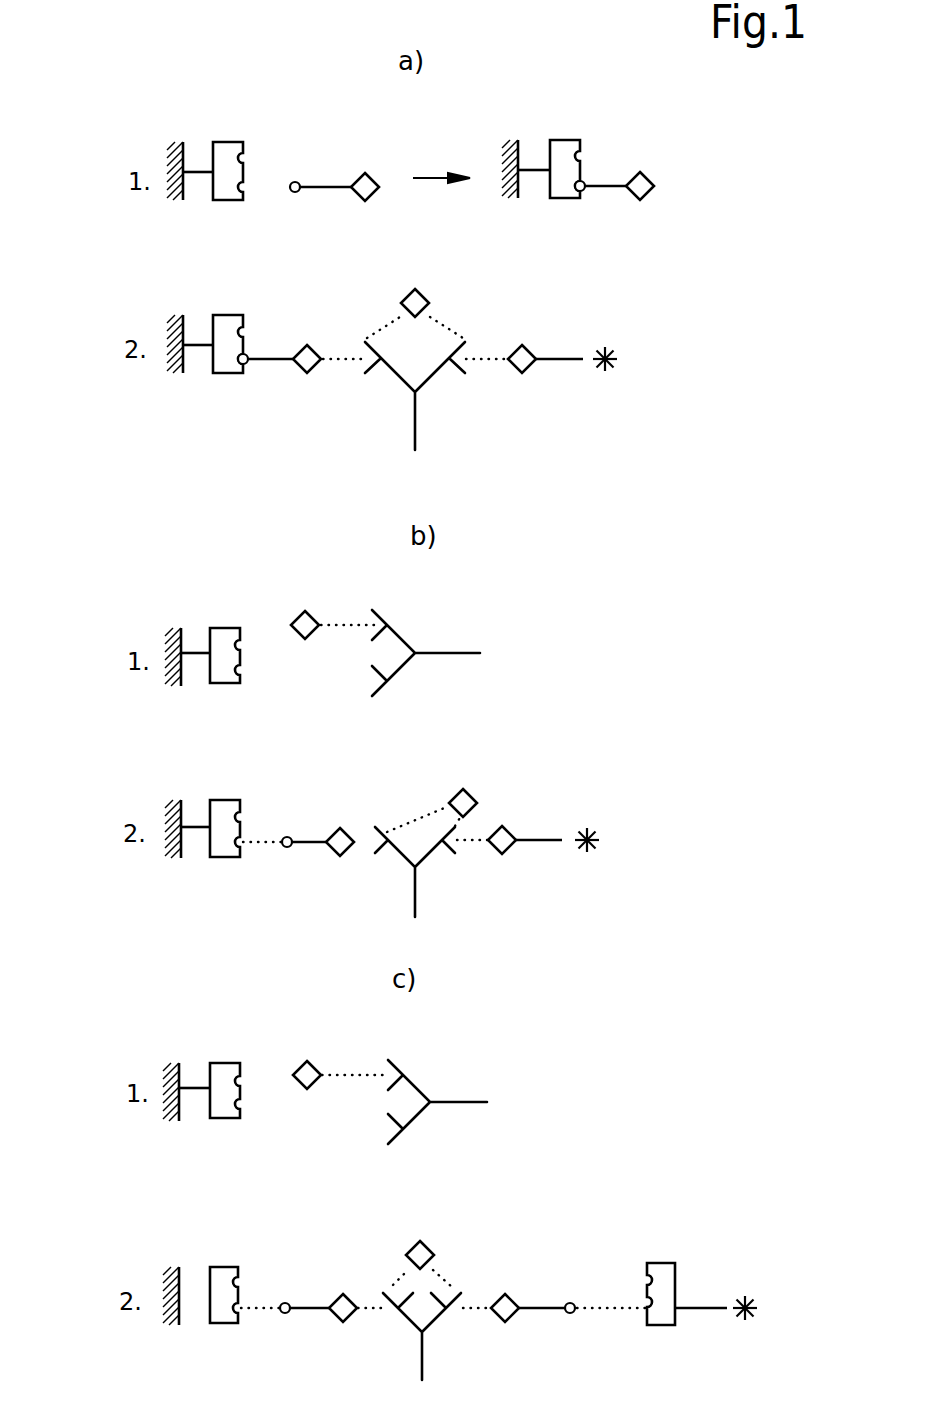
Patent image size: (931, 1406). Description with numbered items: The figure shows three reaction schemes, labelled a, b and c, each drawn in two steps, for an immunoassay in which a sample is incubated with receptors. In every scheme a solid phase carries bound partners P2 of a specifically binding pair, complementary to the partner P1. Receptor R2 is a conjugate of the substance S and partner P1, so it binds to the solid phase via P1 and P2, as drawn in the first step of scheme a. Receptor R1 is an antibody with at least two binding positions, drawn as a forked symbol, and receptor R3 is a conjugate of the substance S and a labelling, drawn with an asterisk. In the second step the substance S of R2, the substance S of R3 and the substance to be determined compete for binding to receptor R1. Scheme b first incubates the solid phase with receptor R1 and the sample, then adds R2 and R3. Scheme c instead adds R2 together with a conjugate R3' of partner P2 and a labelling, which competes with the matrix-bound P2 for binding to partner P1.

The partner of the specifically binding pair P1 is at (413, 768).
The partner of the specifically binding pair bound to the solid phase P2 is at (443, 714).
The receptor R1 is at (426, 865).
The receptor R2 is at (437, 724).
The receptor R3 is at (566, 621).
The conjugate of partner P2 and labelling R3' is at (716, 1296).
The substance to be determined S is at (466, 764).